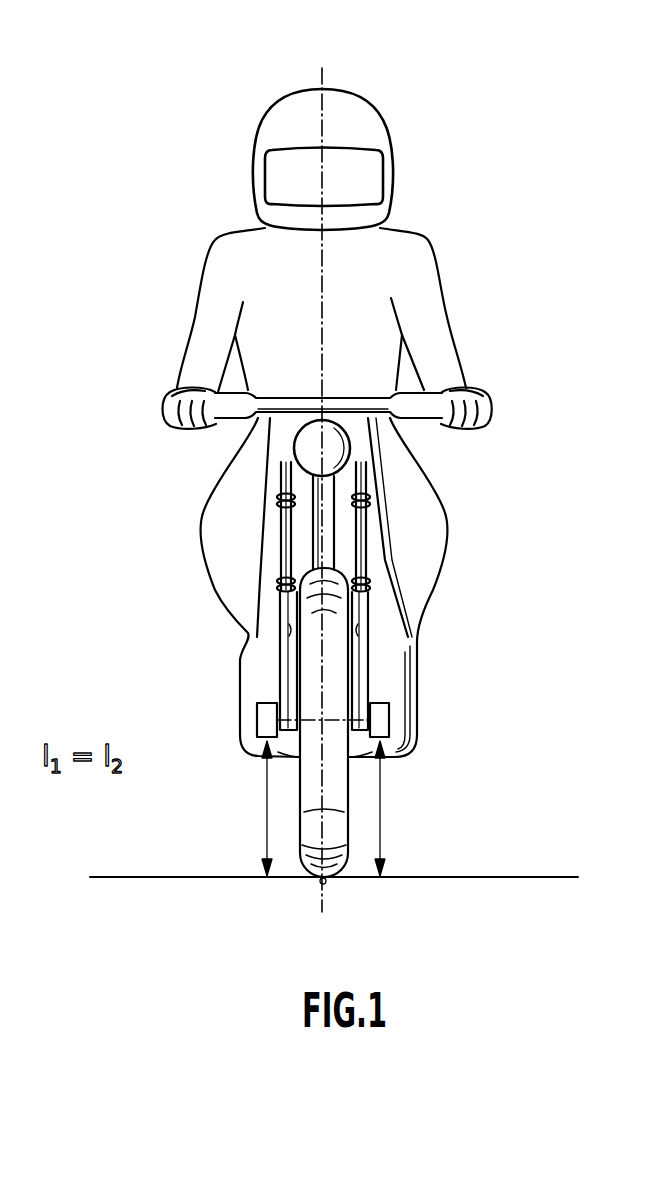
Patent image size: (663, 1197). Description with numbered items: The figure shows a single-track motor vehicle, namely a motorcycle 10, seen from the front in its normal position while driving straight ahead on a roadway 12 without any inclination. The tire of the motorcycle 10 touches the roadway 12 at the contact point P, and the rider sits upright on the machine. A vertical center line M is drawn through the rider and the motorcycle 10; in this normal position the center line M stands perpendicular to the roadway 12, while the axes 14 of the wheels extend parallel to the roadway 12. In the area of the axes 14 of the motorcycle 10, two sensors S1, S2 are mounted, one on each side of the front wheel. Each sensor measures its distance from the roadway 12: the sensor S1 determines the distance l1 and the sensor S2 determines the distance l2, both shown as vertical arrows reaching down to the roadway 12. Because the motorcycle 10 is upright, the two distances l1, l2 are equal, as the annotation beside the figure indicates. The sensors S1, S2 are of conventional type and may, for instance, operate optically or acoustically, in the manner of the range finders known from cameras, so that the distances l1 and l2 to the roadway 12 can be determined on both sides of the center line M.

The center line M is at (322, 73).
The motorcycle 10 is at (422, 648).
The roadway 12 is at (485, 880).
The axes of the wheels 14 is at (306, 722).
The sensor S1 is at (257, 718).
The sensor S2 is at (389, 717).
The distance l1 is at (265, 816).
The distance l2 is at (380, 812).
The point P is at (321, 884).